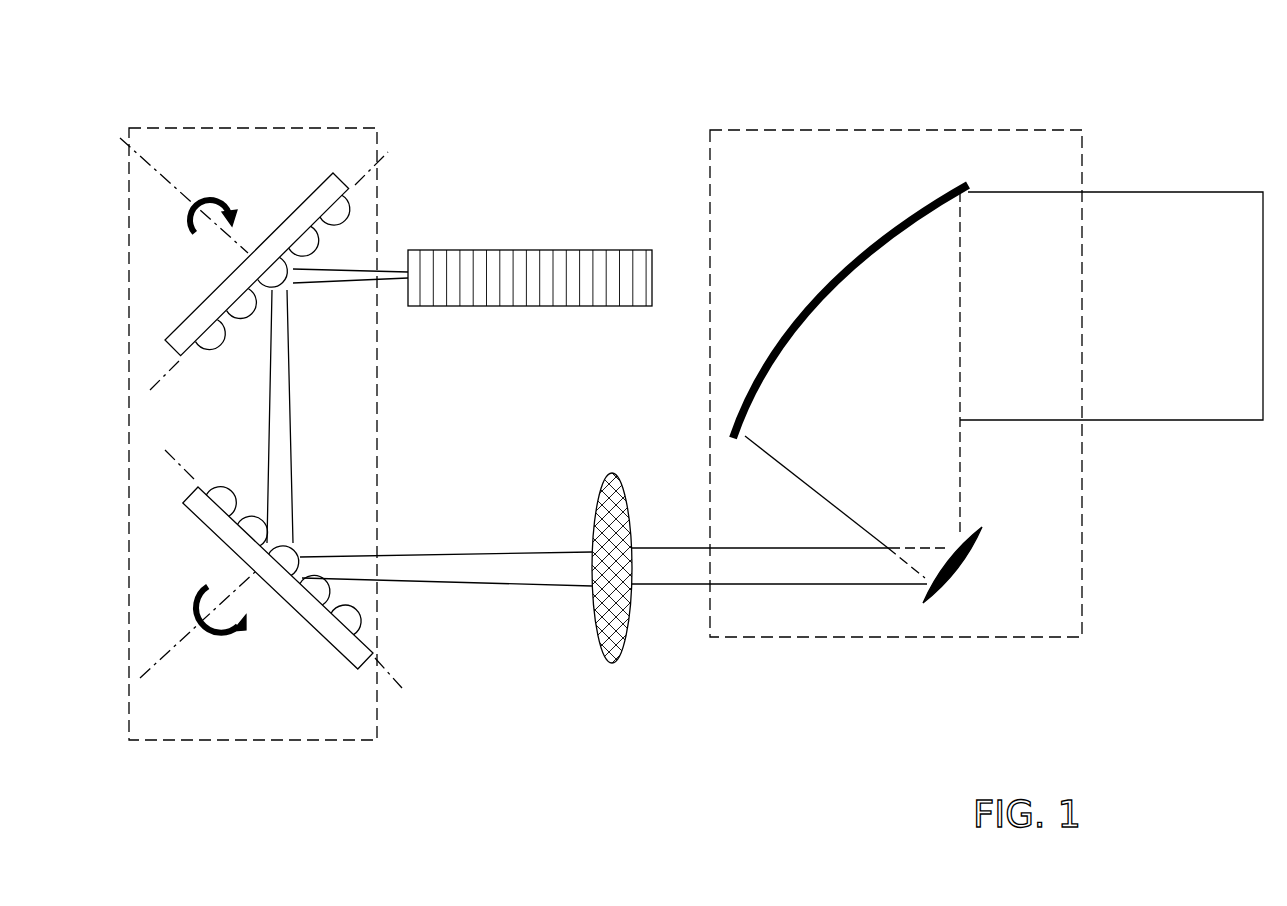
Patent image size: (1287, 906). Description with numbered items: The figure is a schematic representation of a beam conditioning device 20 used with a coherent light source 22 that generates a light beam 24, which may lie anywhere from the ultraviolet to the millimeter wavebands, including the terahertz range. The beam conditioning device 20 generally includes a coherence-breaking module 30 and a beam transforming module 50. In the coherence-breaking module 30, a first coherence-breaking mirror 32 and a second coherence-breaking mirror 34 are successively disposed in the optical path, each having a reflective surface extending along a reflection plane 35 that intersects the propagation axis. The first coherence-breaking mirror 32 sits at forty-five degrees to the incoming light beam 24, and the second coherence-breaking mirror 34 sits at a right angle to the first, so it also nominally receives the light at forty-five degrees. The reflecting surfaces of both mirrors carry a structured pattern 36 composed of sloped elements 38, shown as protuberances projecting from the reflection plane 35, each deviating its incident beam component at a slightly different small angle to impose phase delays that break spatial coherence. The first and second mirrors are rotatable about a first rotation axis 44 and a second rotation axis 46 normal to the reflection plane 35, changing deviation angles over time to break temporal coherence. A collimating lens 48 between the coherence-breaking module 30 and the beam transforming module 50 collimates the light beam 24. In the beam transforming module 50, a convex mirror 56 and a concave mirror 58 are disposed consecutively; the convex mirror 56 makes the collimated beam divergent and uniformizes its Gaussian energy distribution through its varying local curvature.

The beam conditioning device 20 is at (808, 92).
The coherent light source 22 is at (607, 250).
The light beam 24 is at (390, 272).
The coherence-breaking module 30 is at (270, 127).
The first coherence-breaking mirror 32 is at (334, 172).
The second coherence-breaking mirror 34 is at (341, 654).
The reflection plane 35 is at (167, 376).
The structured pattern 36 is at (358, 199).
The sloped elements 38 is at (308, 243).
The first rotation axis 44 is at (152, 171).
The second rotation axis 46 is at (157, 662).
The collimating lens 48 is at (600, 494).
The beam transforming module 50 is at (962, 128).
The convex mirror 56 is at (956, 566).
The concave mirror 58 is at (816, 300).